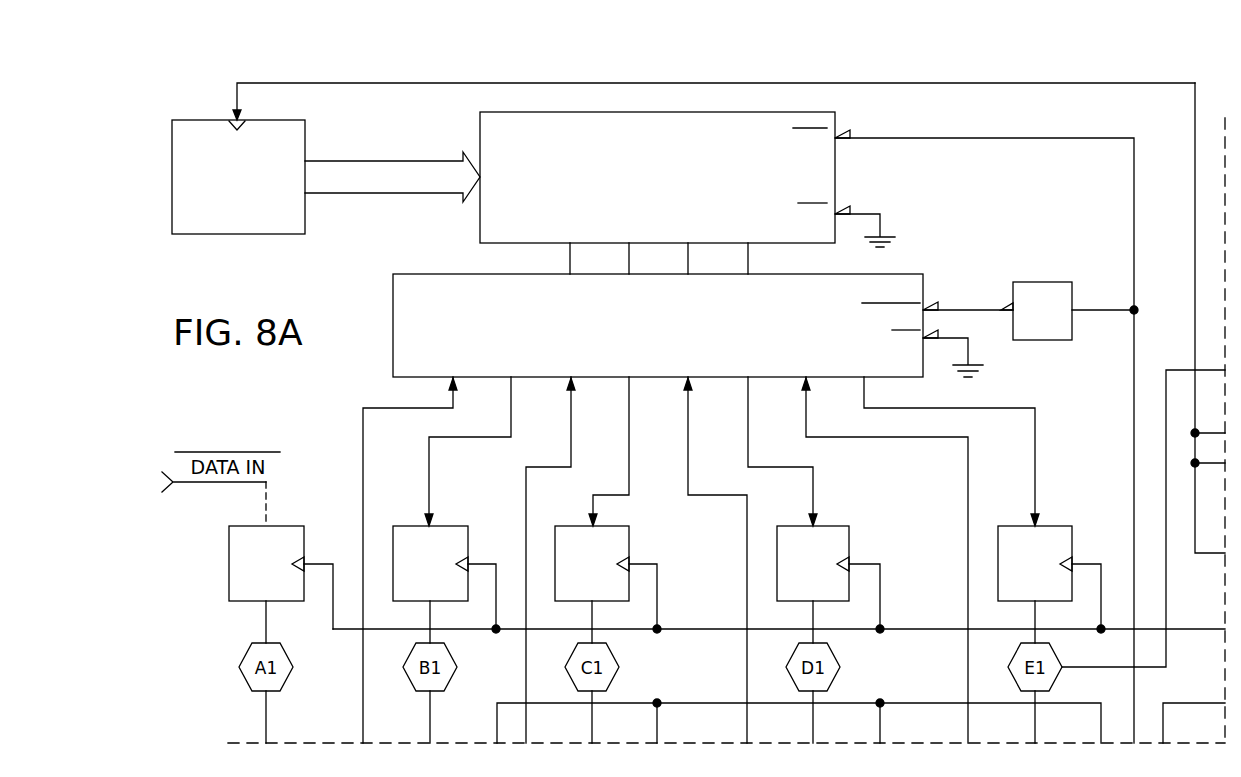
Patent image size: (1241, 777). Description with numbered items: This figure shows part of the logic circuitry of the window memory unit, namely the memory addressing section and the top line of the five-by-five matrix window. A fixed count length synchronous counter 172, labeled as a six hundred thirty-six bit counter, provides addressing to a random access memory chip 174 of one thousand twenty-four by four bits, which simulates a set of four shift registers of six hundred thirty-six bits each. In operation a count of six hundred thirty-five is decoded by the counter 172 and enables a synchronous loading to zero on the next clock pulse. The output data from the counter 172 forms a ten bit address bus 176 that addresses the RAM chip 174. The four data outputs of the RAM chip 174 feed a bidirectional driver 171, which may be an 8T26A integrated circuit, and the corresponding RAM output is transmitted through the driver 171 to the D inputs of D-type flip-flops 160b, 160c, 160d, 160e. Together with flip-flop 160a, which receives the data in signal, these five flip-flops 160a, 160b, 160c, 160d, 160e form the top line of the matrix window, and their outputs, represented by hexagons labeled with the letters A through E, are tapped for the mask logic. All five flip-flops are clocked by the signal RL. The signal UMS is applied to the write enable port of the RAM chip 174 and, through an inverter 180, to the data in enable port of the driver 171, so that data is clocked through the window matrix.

The fixed count length synchronous counter 172 is at (220, 125).
The 10 bit address bus 176 is at (418, 161).
The 1024×4 bit random access memory chip 174 is at (825, 172).
The bidirectional driver 171 is at (900, 273).
The inverter 180 is at (1038, 290).
The D-type flip-flop 160a is at (276, 530).
The D-type flip-flop 160b is at (435, 528).
The D-type flip-flop 160c is at (622, 538).
The D-type flip-flop 160d is at (825, 530).
The D-type flip-flop 160e is at (1050, 528).